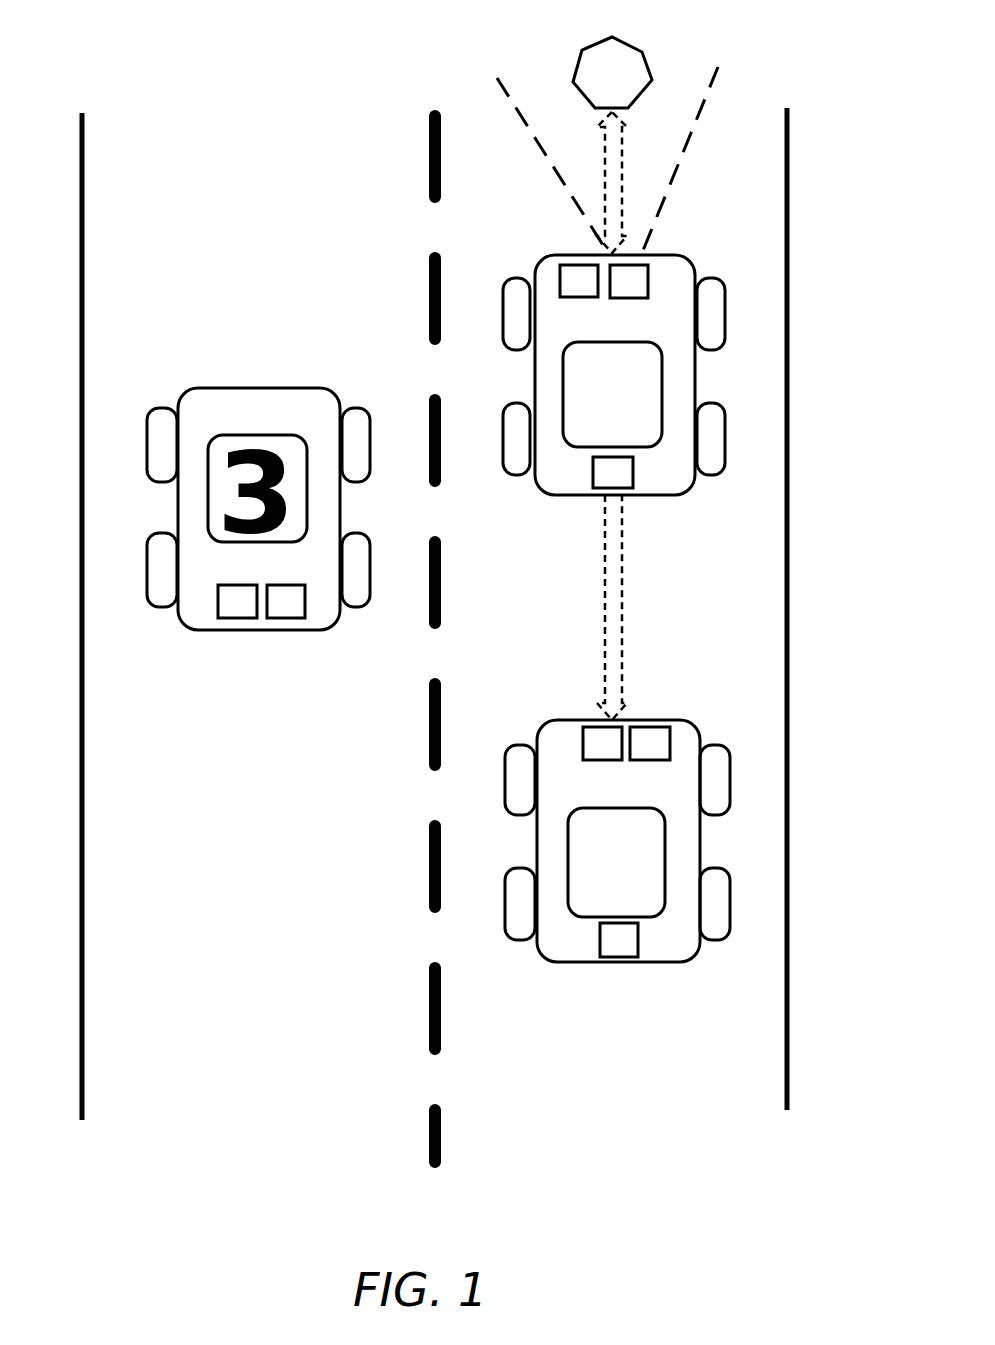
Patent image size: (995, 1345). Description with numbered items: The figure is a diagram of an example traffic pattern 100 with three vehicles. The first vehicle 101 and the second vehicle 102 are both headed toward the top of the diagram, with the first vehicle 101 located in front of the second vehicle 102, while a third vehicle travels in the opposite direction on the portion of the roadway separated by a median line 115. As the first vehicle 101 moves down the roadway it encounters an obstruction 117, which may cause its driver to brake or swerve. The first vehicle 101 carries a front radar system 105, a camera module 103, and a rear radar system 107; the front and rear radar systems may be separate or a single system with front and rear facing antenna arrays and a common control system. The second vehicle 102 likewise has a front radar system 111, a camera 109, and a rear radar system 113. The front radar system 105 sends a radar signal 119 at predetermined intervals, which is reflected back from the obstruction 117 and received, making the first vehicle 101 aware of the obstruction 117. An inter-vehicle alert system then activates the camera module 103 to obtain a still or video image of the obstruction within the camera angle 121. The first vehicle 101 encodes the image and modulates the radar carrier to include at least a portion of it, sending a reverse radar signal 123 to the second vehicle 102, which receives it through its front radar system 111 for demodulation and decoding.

The traffic pattern 100 is at (796, 55).
The first vehicle 101 is at (672, 495).
The second vehicle 102 is at (667, 962).
The camera module 103 is at (648, 278).
The front radar system 105 is at (570, 265).
The rear radar system 107 is at (597, 475).
The camera 109 is at (657, 727).
The front radar system 111 is at (585, 722).
The rear radar system 113 is at (608, 945).
The median line 115 is at (382, 182).
The obstruction 117 is at (625, 68).
The radar signal 119 is at (617, 152).
The camera angle 121 is at (675, 175).
The reverse radar signal 123 is at (618, 633).